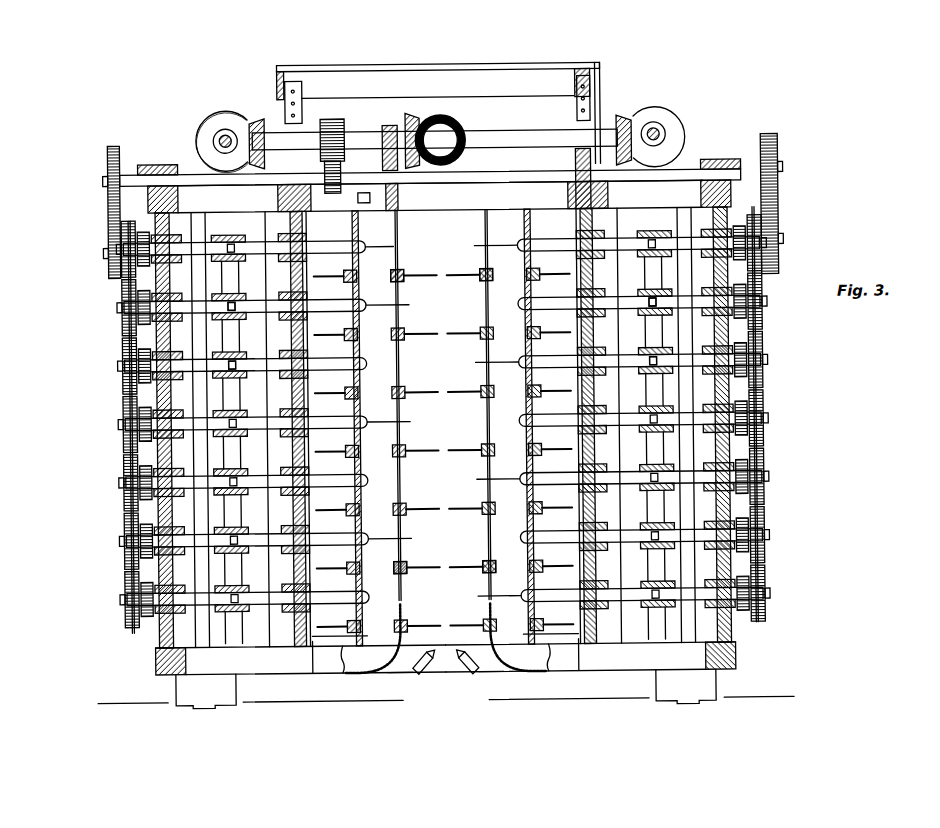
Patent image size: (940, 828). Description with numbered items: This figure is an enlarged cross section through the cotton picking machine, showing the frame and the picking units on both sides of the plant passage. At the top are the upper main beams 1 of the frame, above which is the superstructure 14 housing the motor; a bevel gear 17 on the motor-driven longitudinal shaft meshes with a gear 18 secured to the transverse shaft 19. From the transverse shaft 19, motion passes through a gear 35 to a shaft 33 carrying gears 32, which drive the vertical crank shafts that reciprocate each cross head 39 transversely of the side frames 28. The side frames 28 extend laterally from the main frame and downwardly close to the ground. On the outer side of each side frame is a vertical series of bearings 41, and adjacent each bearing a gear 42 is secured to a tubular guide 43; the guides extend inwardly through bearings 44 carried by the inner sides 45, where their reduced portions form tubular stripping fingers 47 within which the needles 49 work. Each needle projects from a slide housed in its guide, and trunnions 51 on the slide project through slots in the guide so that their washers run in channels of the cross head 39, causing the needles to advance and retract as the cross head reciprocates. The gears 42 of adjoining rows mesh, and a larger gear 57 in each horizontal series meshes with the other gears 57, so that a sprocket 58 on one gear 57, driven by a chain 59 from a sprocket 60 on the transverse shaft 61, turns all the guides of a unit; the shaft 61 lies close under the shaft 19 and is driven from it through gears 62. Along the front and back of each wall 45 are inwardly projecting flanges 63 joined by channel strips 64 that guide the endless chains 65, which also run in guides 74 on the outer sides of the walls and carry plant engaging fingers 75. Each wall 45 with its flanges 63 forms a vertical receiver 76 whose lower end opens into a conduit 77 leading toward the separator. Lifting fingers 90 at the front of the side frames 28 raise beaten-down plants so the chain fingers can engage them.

The upper main beams 1 is at (272, 193).
The superstructure 14 is at (600, 70).
The bevel gear 17 is at (450, 118).
The gear 18 is at (414, 112).
The transverse shaft 19 is at (490, 136).
The side frames 28 is at (165, 163).
The gear 32 is at (215, 126).
The shaft 33 is at (229, 127).
The gear 35 is at (260, 118).
The cross head 39 is at (130, 336).
The bearings 41 is at (152, 614).
The gear 42 is at (128, 516).
The tubular guide 43 is at (150, 278).
The bearings 44 is at (575, 236).
The inner sides 45 is at (360, 232).
The tubular stripping fingers 47 is at (340, 362).
The needles 49 is at (382, 362).
The trunnions 51 is at (238, 362).
The larger gear 57 is at (128, 455).
The sprocket 58 is at (116, 253).
The chain 59 is at (108, 206).
The sprocket 60 is at (108, 152).
The transverse shaft 61 is at (692, 160).
The gears 62 is at (335, 118).
The flanges 63 is at (487, 408).
The channel strips 64 is at (400, 270).
The endless chains 65 is at (480, 562).
The guides 74 is at (348, 272).
The plant engaging fingers 75 is at (428, 275).
The vertical receiver 76 is at (470, 450).
The conduit 77 is at (325, 660).
The lifting fingers 90 is at (476, 666).